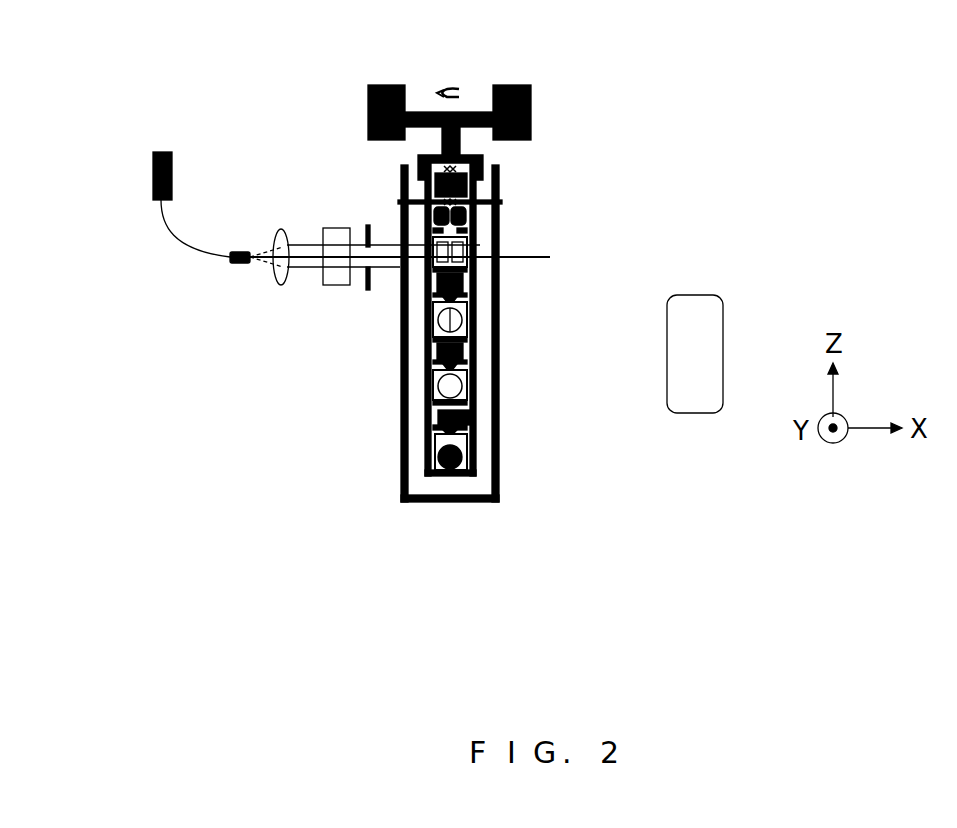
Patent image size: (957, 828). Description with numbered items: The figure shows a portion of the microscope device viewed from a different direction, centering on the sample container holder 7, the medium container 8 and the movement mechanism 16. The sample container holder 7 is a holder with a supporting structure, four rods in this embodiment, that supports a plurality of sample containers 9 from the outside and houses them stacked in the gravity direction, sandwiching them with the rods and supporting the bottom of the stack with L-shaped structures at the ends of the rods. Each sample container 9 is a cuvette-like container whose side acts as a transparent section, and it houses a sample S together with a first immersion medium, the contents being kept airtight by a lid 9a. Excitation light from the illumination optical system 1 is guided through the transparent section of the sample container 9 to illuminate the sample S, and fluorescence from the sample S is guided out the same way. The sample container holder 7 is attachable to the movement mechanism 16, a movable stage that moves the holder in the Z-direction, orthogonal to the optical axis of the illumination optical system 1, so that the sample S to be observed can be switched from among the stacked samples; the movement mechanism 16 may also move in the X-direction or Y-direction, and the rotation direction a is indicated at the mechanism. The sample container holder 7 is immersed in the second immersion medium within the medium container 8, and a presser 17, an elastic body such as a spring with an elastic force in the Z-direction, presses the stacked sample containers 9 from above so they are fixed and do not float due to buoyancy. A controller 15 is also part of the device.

The illumination optical system 1 is at (375, 300).
The sample container holder 7 is at (425, 393).
The medium container 8 is at (402, 460).
The sample container 9 is at (478, 452).
The lid 9a is at (478, 412).
The controller 15 is at (667, 337).
The movement mechanism 16 is at (533, 85).
The presser 17 is at (470, 191).
The sample S is at (450, 462).
The rotation direction a is at (448, 80).